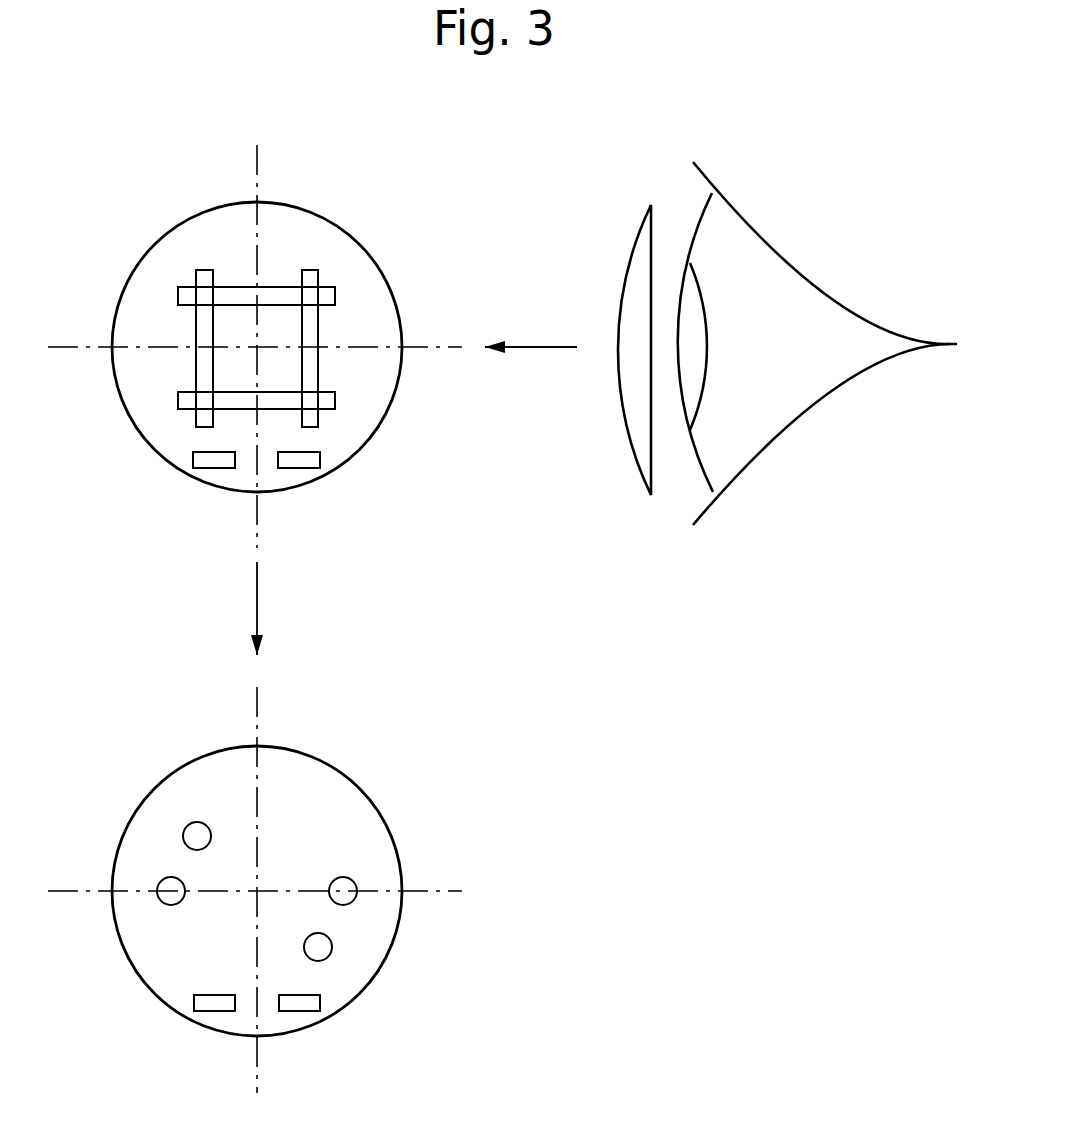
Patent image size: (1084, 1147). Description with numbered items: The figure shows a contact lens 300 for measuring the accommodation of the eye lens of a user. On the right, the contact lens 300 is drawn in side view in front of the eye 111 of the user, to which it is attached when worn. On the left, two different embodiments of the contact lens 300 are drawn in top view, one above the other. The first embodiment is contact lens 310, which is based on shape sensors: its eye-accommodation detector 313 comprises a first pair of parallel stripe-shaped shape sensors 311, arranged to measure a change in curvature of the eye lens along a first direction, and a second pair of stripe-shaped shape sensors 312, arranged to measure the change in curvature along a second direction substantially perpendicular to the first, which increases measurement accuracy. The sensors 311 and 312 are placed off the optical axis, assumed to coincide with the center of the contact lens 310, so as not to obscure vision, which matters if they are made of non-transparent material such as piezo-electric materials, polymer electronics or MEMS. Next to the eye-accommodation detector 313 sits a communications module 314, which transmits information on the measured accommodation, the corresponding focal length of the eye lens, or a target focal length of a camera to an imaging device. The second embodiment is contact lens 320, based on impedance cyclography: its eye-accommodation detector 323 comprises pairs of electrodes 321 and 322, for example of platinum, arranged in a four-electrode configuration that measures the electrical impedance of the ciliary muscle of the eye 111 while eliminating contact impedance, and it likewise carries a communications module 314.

The eye 111 is at (773, 303).
The contact lens 300 is at (637, 232).
The contact lens 310 is at (160, 237).
The shape sensors 311 is at (335, 297).
The shape sensors 312 is at (205, 270).
The eye-accommodation detector 313 is at (215, 468).
The communications module 314 is at (300, 468).
The contact lens 320 is at (163, 777).
The electrodes 321 is at (162, 880).
The electrodes 322 is at (200, 822).
The eye-accommodation detector 323 is at (215, 1011).